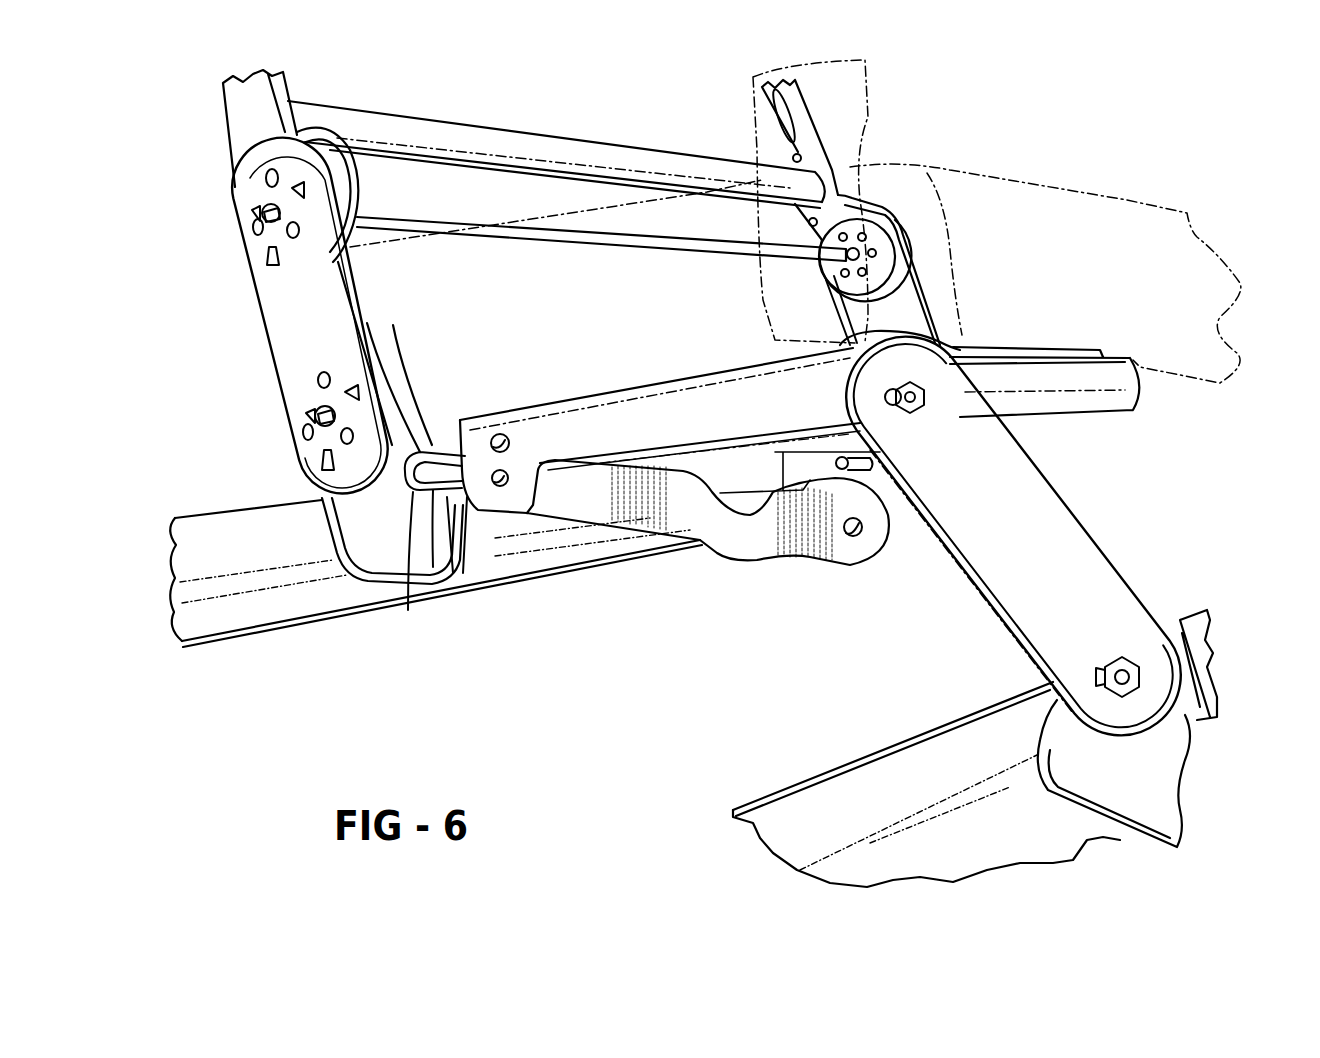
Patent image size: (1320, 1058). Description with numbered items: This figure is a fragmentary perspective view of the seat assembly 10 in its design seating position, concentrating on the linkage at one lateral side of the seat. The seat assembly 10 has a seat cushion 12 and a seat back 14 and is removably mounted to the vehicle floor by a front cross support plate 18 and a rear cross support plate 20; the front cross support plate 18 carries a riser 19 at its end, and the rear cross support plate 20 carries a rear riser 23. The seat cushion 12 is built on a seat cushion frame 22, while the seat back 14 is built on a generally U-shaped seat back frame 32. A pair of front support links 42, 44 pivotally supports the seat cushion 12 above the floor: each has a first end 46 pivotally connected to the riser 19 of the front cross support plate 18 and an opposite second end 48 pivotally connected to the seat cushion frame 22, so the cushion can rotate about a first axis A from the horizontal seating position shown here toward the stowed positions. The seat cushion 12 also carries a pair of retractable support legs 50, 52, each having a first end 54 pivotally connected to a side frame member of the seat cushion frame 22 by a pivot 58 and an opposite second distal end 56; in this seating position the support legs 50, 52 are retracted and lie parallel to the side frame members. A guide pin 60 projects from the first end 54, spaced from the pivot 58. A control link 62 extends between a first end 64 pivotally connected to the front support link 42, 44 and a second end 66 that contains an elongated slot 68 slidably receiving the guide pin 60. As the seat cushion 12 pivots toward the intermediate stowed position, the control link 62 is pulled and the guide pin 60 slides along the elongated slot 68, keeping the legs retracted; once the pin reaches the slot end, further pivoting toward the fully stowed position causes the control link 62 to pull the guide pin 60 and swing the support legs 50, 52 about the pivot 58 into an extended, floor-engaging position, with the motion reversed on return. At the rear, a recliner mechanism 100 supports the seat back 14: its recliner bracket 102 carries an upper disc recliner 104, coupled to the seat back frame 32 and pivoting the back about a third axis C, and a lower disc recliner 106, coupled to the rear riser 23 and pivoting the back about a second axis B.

The seat assembly 10 is at (1082, 128).
The seat cushion 12 is at (1130, 201).
The seat back 14 is at (867, 93).
The front cross support plate 18 is at (895, 770).
The riser 19 is at (1163, 790).
The rear cross support plate 20 is at (223, 520).
The seat cushion frame 22 is at (1062, 375).
The rear riser 23 is at (360, 535).
The seat back frame 32 is at (773, 147).
The front support link 42 is at (1010, 630).
The front support link 44 is at (971, 581).
The first end 46 is at (1100, 582).
The second end 48 is at (925, 357).
The retractable support leg 50 is at (627, 410).
The retractable support leg 52 is at (704, 450).
The first end 54 is at (497, 417).
The second distal end 56 is at (790, 382).
The pivot 58 is at (485, 438).
The guide pin 60 is at (493, 520).
The control link 62 is at (745, 550).
The first end 64 is at (853, 536).
The second end 66 is at (418, 452).
The elongated slot 68 is at (413, 520).
The recliner mechanism 100 is at (247, 328).
The recliner bracket 102 is at (285, 362).
The upper disc recliner 104 is at (238, 195).
The lower disc recliner 106 is at (300, 440).
The first axis A is at (908, 412).
The second axis B is at (316, 410).
The third axis C is at (266, 213).